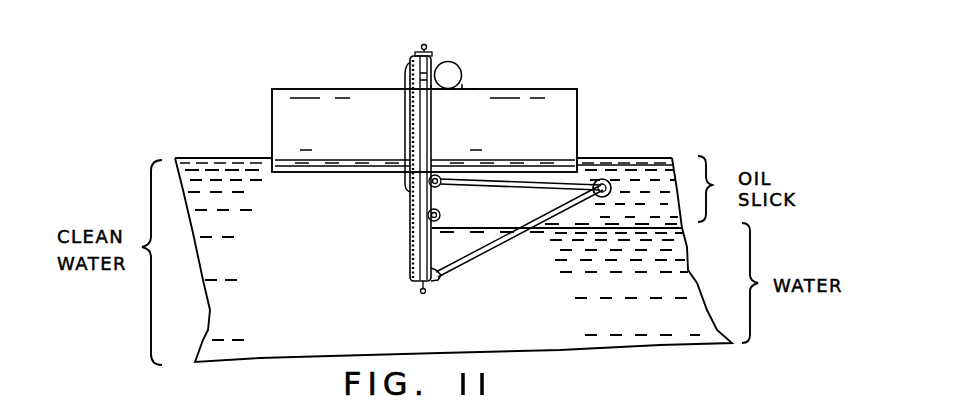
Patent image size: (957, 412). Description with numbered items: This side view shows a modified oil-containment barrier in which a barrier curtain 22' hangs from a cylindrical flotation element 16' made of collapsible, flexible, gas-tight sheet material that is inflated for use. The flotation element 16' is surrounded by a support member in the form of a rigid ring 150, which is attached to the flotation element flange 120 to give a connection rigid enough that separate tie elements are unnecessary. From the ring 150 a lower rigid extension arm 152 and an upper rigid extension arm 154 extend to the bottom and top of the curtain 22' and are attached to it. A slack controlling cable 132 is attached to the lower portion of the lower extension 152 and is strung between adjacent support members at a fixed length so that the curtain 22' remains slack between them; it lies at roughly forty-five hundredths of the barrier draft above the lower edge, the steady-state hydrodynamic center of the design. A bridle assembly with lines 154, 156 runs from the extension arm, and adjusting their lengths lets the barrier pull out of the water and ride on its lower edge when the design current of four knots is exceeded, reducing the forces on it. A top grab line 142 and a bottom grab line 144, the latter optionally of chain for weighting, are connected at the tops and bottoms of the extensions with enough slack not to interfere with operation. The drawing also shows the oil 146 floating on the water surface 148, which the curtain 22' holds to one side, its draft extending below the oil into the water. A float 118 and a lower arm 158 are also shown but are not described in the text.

The flotation element 16' is at (396, 129).
The barrier curtain 22' is at (380, 214).
The float 118 is at (450, 74).
The flotation element flange 120 is at (410, 117).
The slack controlling cable 132 is at (440, 215).
The top grab line 142 is at (421, 45).
The bottom grab line 144 is at (422, 294).
The oil 146 is at (672, 153).
The water surface 148 is at (670, 226).
The rigid ring 150 is at (437, 122).
The lower rigid extension arm 152 is at (413, 245).
The upper rigid extension arm 154 is at (418, 67).
The bridle line 156 is at (507, 190).
The lower arm 158 is at (500, 246).